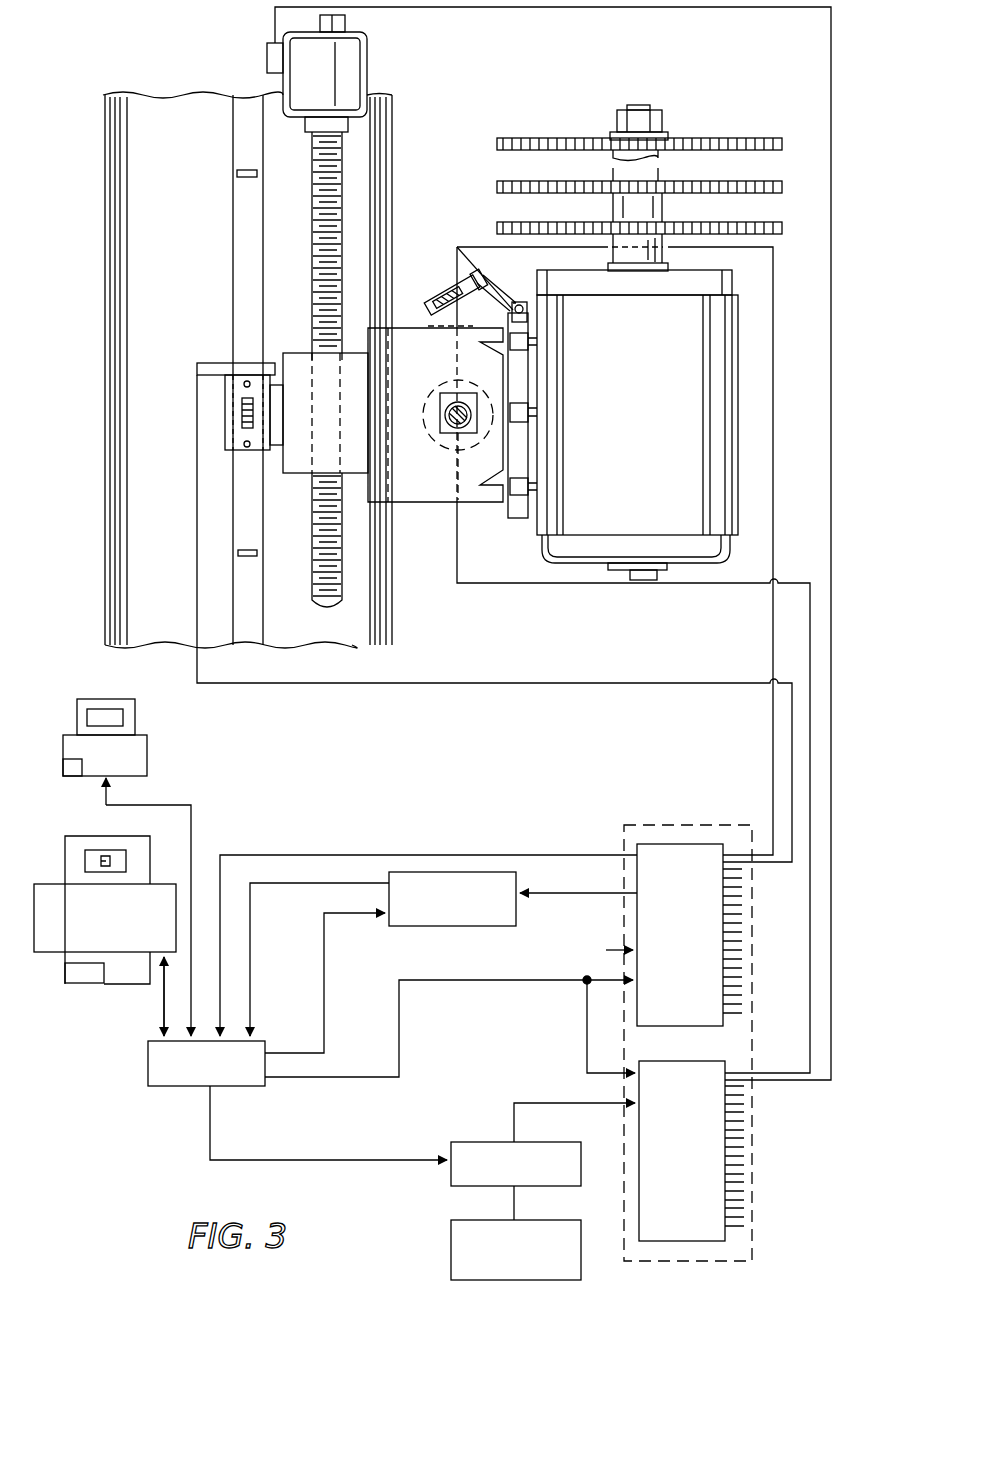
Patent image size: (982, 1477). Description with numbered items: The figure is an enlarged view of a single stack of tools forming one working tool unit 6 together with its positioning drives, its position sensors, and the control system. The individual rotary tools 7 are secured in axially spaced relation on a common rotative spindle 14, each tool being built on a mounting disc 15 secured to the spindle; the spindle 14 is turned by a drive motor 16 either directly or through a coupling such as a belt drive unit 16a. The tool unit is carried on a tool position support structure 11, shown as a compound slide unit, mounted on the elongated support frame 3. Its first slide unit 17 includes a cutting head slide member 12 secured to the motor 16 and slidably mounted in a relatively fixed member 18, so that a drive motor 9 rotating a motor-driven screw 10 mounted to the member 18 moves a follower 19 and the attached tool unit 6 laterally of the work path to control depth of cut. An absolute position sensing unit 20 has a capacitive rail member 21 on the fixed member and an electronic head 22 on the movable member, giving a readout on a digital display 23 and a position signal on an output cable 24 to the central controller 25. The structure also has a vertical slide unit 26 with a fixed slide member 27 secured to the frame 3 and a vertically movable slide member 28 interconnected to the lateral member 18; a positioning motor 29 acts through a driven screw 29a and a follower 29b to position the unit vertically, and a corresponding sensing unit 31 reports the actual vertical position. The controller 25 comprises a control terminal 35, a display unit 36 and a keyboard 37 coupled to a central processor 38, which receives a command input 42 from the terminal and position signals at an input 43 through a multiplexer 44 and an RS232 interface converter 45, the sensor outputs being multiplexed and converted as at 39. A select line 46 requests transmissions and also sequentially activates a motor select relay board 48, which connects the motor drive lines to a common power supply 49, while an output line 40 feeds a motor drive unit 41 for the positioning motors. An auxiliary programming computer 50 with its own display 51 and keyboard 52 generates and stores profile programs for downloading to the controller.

The support frame 3 is at (396, 121).
The tool unit 6 is at (652, 155).
The rotary tools 7 is at (784, 228).
The drive motor 9 is at (443, 449).
The motor-driven screw 10 is at (440, 410).
The tool position support structure 11 is at (430, 507).
The cutting head slide member 12 is at (478, 392).
The rotative spindle 14 is at (640, 106).
The mounting disc 15 is at (573, 140).
The drive motor 16 is at (637, 425).
The belt drive unit 16a is at (640, 292).
The first slide unit 17 is at (495, 491).
The fixed member 18 is at (418, 327).
The follower 19 is at (442, 428).
The absolute position sensing unit 20 is at (448, 263).
The capacitive rail member 21 is at (432, 329).
The electronic head 22 is at (434, 290).
The digital display 23 is at (240, 415).
The output cable 24 is at (480, 247).
The central controller 25 is at (510, 963).
The vertical slide unit 26 is at (305, 350).
The fixed slide member 27 is at (383, 174).
The vertically movable slide member 28 is at (373, 425).
The positioning motor 29 is at (367, 61).
The driven screw 29a is at (313, 542).
The follower 29b is at (300, 448).
The electronic head and rail sensing unit 31 is at (215, 386).
The control terminal 35 is at (150, 766).
The display unit 36 is at (135, 716).
The keyboard 37 is at (73, 778).
The central processor 38 is at (187, 1091).
The multiplexing and converting unit 39 is at (690, 839).
The output line 40 is at (367, 1156).
The motor drive unit 41 is at (586, 1140).
The command input 42 is at (191, 1017).
The input 43 is at (250, 993).
The multiplexer 44 is at (578, 927).
The interface converter 45 is at (405, 928).
The select line 46 is at (447, 988).
The motor select relay board 48 is at (695, 1219).
The power supply 49 is at (451, 1253).
The auxiliary programming computer 50 is at (125, 991).
The display 51 is at (104, 856).
The keyboard 52 is at (82, 976).